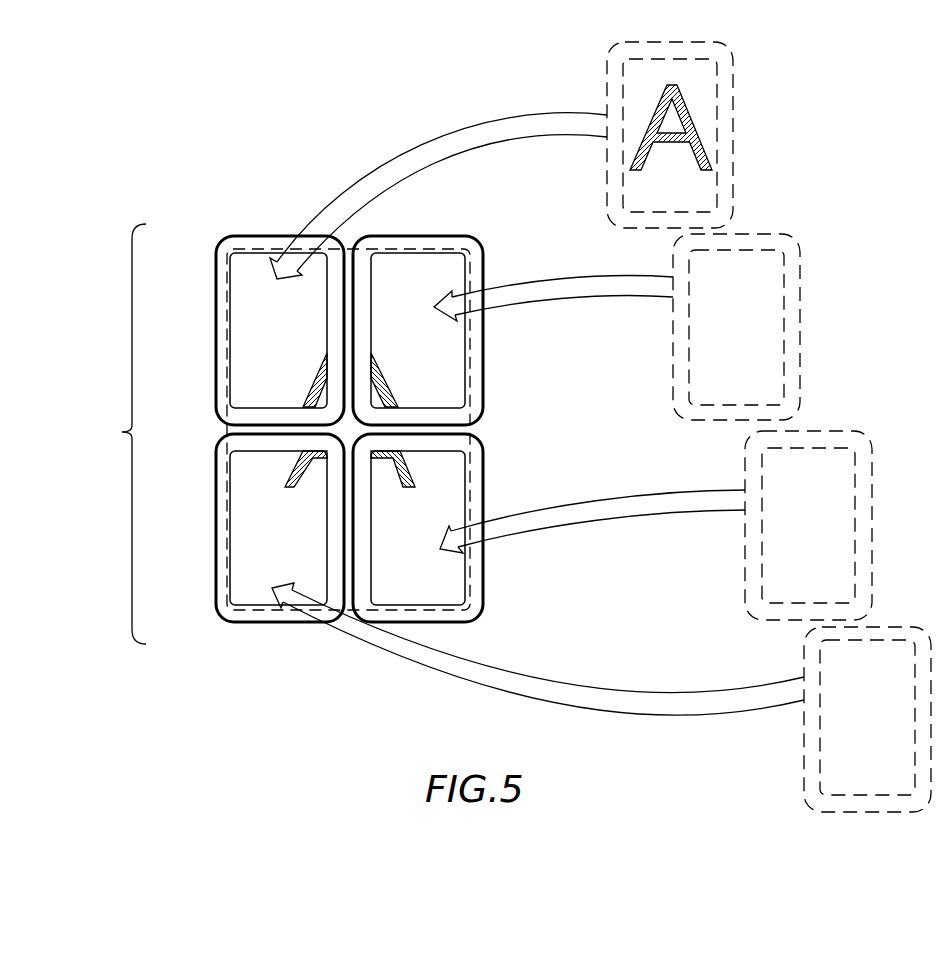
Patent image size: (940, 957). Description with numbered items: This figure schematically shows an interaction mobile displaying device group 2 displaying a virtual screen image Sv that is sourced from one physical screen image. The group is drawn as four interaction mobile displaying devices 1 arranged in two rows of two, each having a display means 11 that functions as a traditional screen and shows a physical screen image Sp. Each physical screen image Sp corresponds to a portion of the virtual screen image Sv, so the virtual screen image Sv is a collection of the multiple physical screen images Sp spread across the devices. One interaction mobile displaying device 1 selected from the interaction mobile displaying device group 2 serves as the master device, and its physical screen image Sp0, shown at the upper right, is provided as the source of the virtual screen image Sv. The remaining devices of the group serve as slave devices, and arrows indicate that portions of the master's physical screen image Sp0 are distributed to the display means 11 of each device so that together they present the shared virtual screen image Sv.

The interaction mobile displaying device 1 is at (224, 222).
The interaction mobile displaying device group 2 is at (121, 434).
The display means 11 is at (222, 368).
The physical screen image Sp is at (255, 326).
The virtual screen image Sv is at (467, 429).
The physical screen image of the master device Sp0 is at (697, 100).